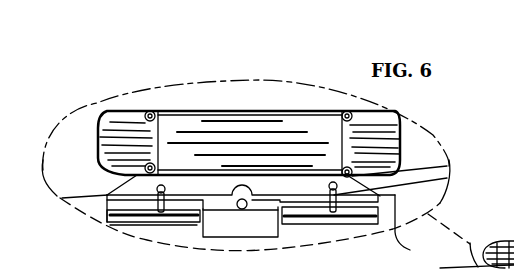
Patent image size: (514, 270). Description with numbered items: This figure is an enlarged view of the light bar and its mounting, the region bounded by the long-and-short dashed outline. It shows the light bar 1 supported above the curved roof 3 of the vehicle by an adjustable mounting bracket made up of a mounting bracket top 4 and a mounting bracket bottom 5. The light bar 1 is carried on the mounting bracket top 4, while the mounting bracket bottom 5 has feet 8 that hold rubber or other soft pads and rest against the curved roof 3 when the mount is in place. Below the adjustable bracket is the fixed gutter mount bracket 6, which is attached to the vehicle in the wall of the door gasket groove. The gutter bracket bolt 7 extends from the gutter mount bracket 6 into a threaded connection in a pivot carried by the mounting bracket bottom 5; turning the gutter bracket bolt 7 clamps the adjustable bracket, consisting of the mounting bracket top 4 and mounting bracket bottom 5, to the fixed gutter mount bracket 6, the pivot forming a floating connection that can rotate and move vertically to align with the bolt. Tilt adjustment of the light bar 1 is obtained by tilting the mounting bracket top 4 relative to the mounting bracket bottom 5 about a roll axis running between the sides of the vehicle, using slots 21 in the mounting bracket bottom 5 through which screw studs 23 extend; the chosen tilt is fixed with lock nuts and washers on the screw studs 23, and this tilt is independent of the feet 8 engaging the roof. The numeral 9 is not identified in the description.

The light bar 1 is at (251, 111).
The curved roof 3 is at (472, 269).
The mounting bracket top 4 is at (134, 177).
The mounting bracket bottom 5 is at (121, 209).
The gutter mount bracket 6 is at (228, 222).
The gutter bracket bolt 7 is at (242, 215).
The feet 8 is at (127, 226).
The right rail 9 is at (310, 222).
The slots 21 is at (160, 220).
The screw studs 23 is at (62, 198).